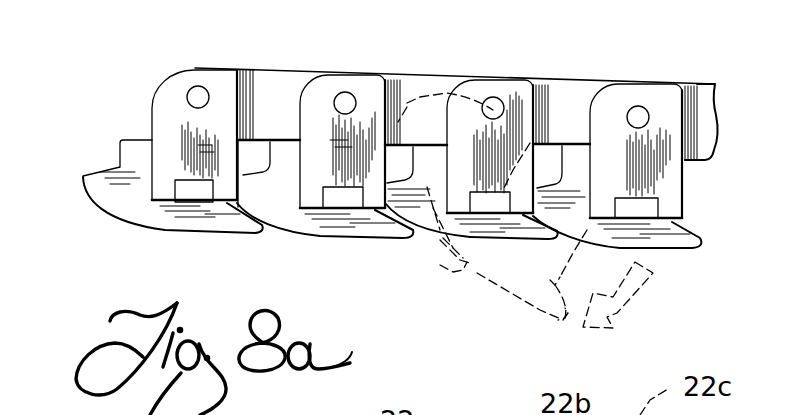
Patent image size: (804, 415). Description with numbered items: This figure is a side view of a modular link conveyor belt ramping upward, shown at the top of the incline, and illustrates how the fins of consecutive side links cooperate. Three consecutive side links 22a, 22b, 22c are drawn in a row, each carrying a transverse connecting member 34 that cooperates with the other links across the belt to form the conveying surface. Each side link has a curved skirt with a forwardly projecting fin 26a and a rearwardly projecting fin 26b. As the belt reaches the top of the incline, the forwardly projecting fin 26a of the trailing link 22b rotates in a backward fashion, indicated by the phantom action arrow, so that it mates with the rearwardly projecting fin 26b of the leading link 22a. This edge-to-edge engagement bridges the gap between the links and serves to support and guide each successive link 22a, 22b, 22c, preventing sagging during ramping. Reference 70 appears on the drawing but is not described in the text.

The transverse connecting member 34 is at (196, 93).
The hinge band 70 is at (216, 135).
The leading side link 22a is at (265, 140).
The trailing side link 22b is at (432, 120).
The side link 22c is at (552, 160).
The forwardly projecting fin 26a is at (323, 197).
The rearwardly projecting fin 26b is at (373, 217).